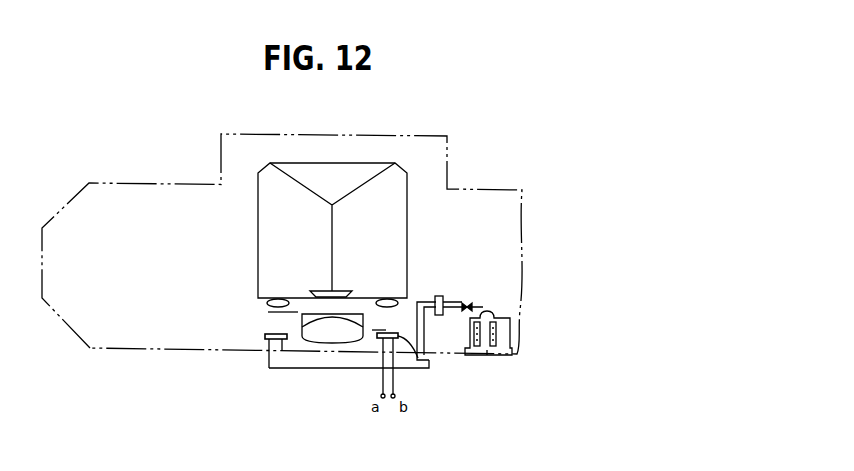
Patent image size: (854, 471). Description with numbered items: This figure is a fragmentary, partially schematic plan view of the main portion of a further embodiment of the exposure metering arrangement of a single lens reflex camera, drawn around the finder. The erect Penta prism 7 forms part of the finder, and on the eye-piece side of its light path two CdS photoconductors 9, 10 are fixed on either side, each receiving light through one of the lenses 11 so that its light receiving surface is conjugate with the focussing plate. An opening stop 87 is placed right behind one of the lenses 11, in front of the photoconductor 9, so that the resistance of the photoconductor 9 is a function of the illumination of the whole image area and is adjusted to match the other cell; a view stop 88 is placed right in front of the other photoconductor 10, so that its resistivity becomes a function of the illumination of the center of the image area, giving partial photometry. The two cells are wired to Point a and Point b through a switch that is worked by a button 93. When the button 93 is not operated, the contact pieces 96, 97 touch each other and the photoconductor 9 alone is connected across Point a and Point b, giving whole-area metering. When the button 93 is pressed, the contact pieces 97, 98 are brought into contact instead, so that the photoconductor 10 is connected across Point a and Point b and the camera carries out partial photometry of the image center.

The erect Penta prism 7 is at (407, 230).
The lenses 11 is at (267, 302).
The opening stop 87 is at (268, 312).
The view stop 88 is at (399, 331).
The photoconductor 9 is at (265, 336).
The photoconductor 10 is at (429, 363).
The contact piece 96 is at (461, 310).
The contact piece 98 is at (442, 298).
The contact piece 97 is at (472, 305).
The button 93 is at (487, 356).